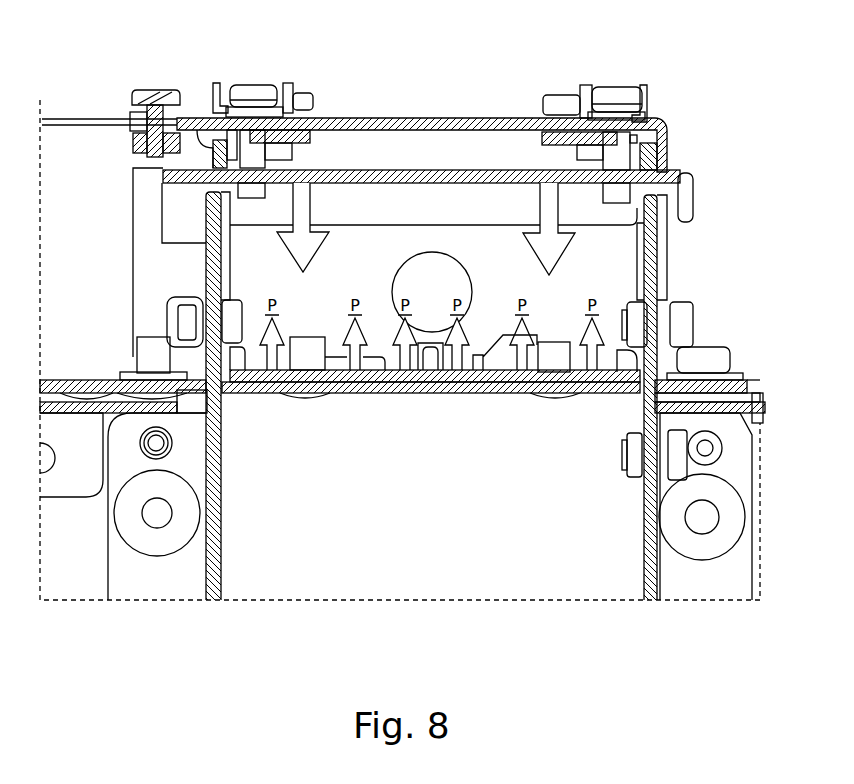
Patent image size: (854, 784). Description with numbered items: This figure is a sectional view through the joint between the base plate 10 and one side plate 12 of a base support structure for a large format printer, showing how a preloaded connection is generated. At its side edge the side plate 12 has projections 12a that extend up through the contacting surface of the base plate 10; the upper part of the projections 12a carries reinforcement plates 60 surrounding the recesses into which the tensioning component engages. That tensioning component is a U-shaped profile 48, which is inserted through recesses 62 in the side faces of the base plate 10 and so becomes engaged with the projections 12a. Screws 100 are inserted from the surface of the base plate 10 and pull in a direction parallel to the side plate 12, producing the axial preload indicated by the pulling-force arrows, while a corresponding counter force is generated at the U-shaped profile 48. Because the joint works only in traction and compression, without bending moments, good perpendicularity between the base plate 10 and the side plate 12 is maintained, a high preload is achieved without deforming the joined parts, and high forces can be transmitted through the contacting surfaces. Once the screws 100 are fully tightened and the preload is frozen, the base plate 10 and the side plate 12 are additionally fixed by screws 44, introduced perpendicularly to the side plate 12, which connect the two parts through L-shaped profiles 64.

The base plate 10 is at (97, 123).
The screws 100 is at (252, 88).
The recesses 62 is at (665, 168).
The U-shaped profile 48 is at (670, 193).
The projections 12a is at (662, 238).
The reinforcement plates 60 is at (665, 275).
The screws 44 is at (183, 320).
The L-shaped profiles 64 is at (130, 373).
The side plate 12 is at (220, 473).